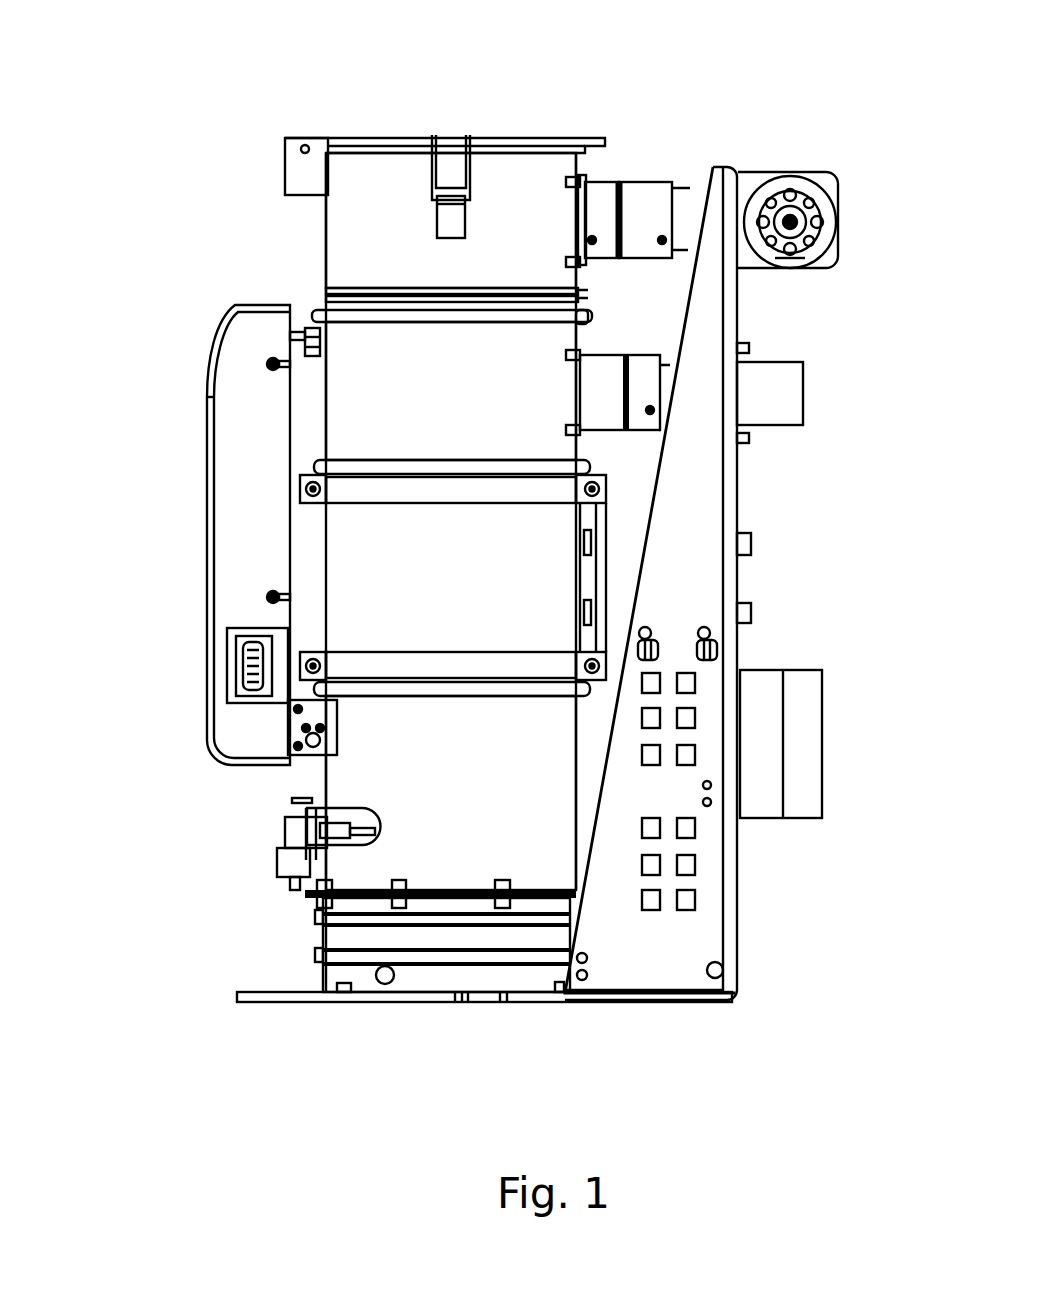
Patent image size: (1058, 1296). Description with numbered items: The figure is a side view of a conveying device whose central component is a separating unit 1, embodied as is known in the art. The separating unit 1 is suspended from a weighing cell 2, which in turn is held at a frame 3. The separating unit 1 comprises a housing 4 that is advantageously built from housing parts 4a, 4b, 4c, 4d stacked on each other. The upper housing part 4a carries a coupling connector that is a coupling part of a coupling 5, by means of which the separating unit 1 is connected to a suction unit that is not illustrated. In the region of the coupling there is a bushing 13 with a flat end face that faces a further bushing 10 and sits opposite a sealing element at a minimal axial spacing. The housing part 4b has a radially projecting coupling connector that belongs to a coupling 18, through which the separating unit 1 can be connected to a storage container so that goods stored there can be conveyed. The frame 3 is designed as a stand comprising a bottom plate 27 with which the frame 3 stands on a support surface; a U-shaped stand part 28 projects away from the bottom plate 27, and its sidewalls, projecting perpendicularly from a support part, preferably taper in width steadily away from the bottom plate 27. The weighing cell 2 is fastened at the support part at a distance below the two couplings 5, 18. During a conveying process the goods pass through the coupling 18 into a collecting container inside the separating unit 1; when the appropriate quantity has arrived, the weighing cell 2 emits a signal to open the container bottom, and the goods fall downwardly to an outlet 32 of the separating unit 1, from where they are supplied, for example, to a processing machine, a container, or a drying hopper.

The separating unit 1 is at (368, 106).
The weighing cell 2 is at (614, 573).
The frame 3 is at (748, 648).
The housing 4 is at (300, 413).
The upper housing part 4a is at (360, 247).
The housing part 4b is at (373, 410).
The housing part 4c is at (373, 583).
The housing part 4d is at (382, 757).
The coupling 5 is at (650, 267).
The bushing 10 is at (598, 198).
The bushing 13 is at (643, 193).
The coupling 18 is at (630, 440).
The bottom plate 27 is at (255, 1003).
The U-shaped stand part 28 is at (698, 917).
The outlet 32 is at (532, 940).